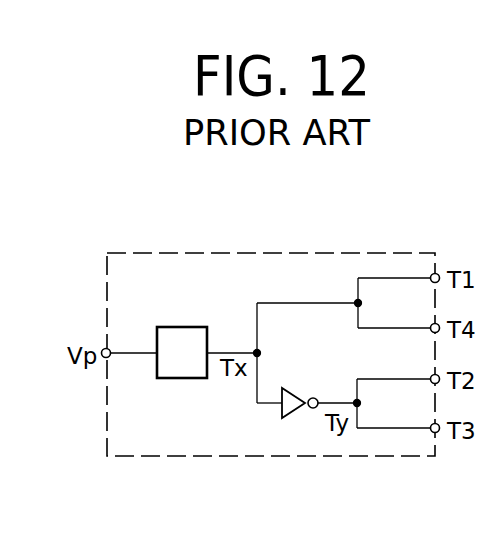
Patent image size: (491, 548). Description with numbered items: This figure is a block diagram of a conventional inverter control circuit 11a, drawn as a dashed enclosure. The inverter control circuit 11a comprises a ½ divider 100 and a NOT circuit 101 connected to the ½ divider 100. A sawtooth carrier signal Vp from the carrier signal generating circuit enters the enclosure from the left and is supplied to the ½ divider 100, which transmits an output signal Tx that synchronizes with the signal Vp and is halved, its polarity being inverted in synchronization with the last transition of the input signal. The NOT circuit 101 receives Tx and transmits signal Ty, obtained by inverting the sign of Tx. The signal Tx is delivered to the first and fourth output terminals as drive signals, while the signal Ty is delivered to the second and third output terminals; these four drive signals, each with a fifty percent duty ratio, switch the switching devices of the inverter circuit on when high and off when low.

The inverter control circuit 11a is at (457, 220).
The ½ divider 100 is at (178, 327).
The NOT circuit 101 is at (297, 389).